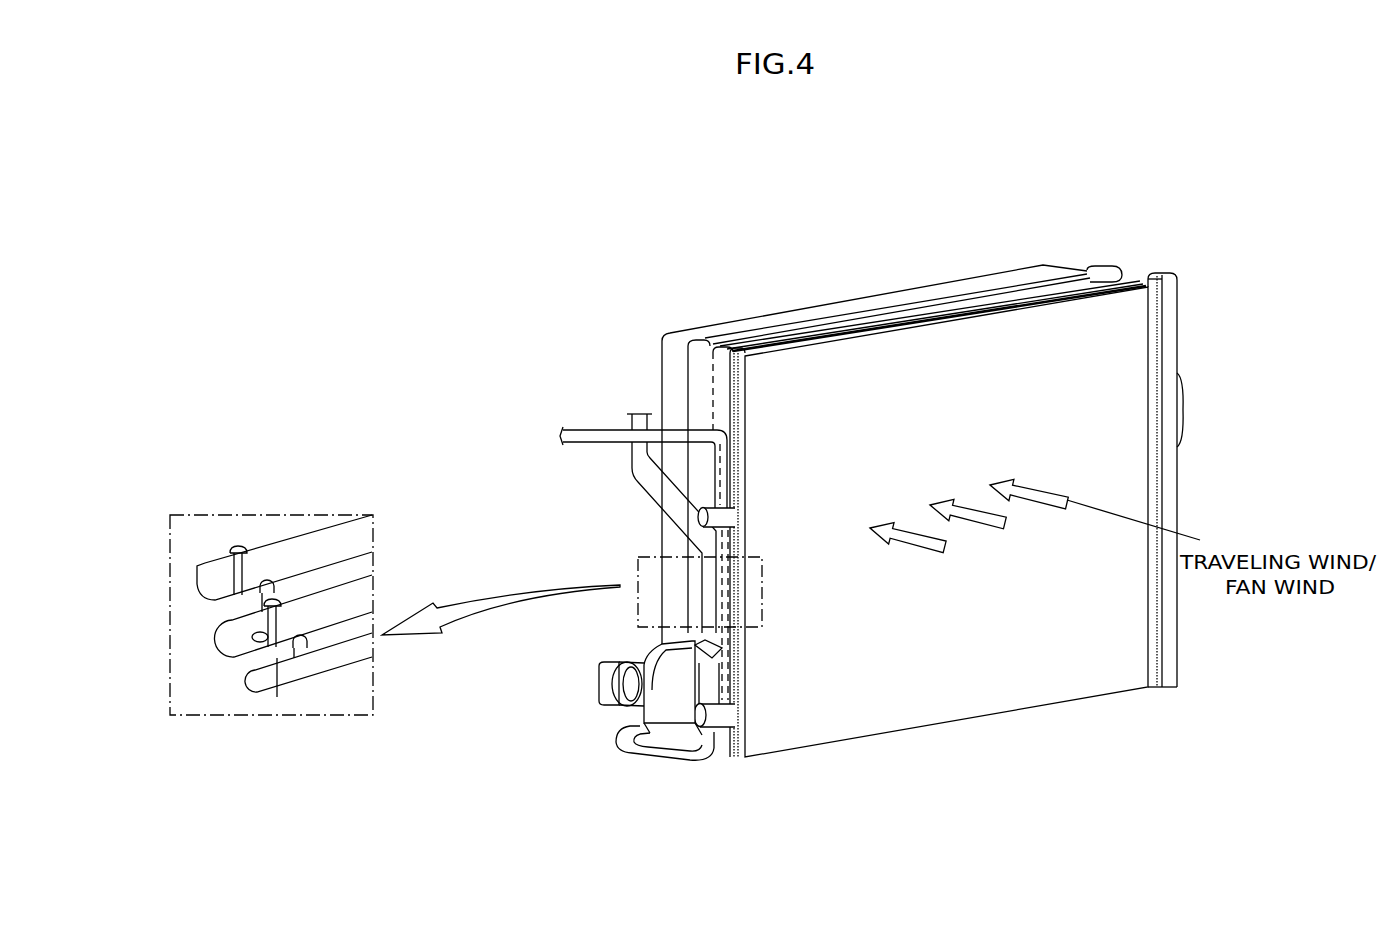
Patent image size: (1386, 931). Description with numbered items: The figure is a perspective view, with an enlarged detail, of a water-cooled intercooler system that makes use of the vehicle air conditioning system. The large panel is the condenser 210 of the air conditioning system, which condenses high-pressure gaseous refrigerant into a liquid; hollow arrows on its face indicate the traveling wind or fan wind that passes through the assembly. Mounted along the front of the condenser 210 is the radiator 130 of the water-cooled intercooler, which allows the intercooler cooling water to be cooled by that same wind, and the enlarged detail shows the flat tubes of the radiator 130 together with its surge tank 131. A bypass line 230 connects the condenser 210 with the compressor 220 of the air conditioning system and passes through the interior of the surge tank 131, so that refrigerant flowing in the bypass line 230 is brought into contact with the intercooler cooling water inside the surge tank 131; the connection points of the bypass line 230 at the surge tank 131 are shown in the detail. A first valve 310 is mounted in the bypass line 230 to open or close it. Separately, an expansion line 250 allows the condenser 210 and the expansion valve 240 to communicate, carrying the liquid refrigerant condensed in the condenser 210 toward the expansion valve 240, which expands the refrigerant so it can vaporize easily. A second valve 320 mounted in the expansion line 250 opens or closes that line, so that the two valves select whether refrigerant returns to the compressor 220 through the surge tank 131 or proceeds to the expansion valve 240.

The radiator of the water-cooled intercooler 130 is at (998, 297).
The surge tank 131 is at (722, 388).
The condenser of the air conditioning system 210 is at (1120, 353).
The compressor of the air conditioning system 220 is at (683, 323).
The bypass line 230 is at (726, 600).
The expansion valve 240 is at (646, 398).
The expansion line 250 is at (648, 494).
The first valve 310 is at (723, 758).
The second valve 320 is at (665, 645).